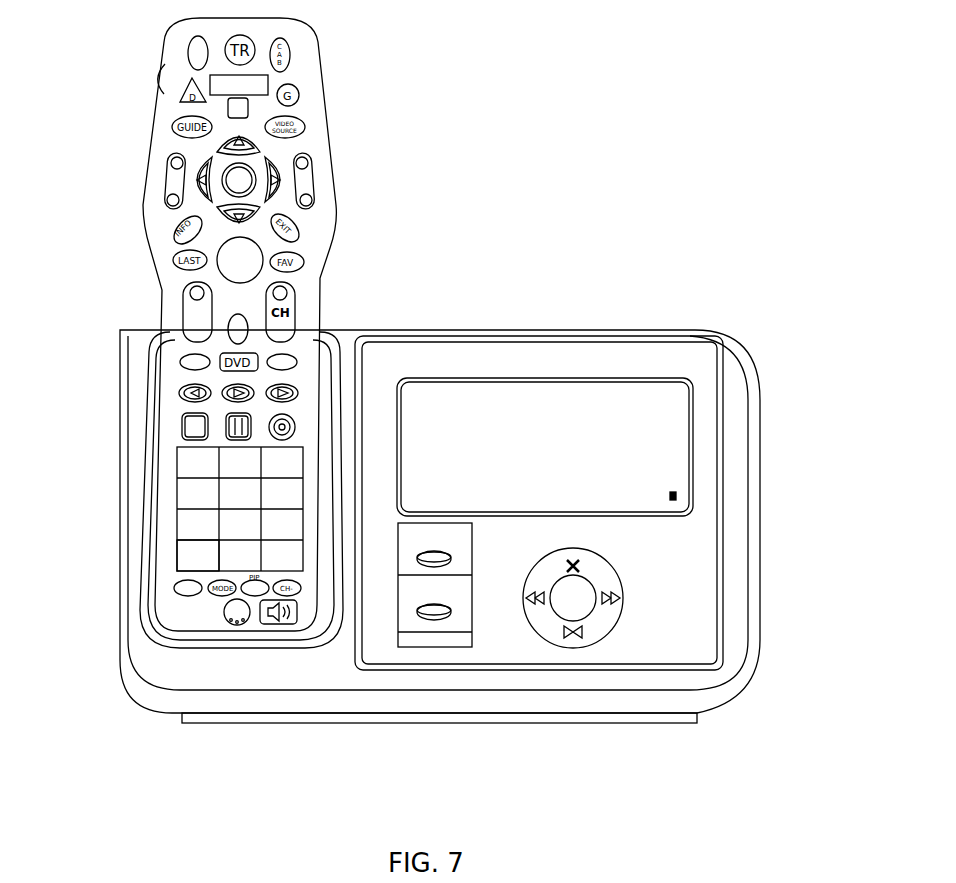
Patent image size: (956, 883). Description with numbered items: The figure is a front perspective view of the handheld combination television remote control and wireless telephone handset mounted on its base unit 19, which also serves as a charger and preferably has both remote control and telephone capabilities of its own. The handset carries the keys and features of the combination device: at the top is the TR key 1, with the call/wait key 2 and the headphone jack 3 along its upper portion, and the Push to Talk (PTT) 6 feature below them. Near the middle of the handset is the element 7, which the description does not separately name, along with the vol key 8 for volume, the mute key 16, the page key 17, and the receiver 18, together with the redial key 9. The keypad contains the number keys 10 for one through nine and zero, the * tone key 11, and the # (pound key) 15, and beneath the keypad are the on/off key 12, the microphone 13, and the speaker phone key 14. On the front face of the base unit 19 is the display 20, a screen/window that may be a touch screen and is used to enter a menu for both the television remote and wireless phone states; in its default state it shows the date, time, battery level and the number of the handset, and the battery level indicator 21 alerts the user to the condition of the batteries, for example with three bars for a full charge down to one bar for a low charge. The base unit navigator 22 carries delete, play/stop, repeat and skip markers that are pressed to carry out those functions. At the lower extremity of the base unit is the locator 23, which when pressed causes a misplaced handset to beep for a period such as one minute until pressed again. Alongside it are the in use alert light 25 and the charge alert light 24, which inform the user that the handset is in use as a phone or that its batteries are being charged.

The TR key 1 is at (192, 52).
The call/wait key 2 is at (156, 79).
The headphone jack 3 is at (160, 126).
The Push to Talk (PTT) 6 is at (143, 233).
The menu button 7 is at (222, 268).
The vol key 8 is at (185, 315).
The redial key 9 is at (181, 363).
The number keys 10 is at (177, 512).
The * tone key 11 is at (177, 560).
The on/off key 12 is at (175, 590).
The microphone 13 is at (226, 617).
The speaker phone key 14 is at (280, 625).
The # (pound key) 15 is at (258, 598).
The mute key 16 is at (238, 302).
The page key 17 is at (312, 178).
The receiver 18 is at (249, 102).
The base unit 19 is at (375, 332).
The display 20 is at (694, 432).
The battery level indicator 21 is at (676, 499).
The navigator key 22 is at (614, 630).
The locator key 23 is at (432, 664).
The charge alert light 24 is at (398, 608).
The in use alert light 25 is at (398, 553).